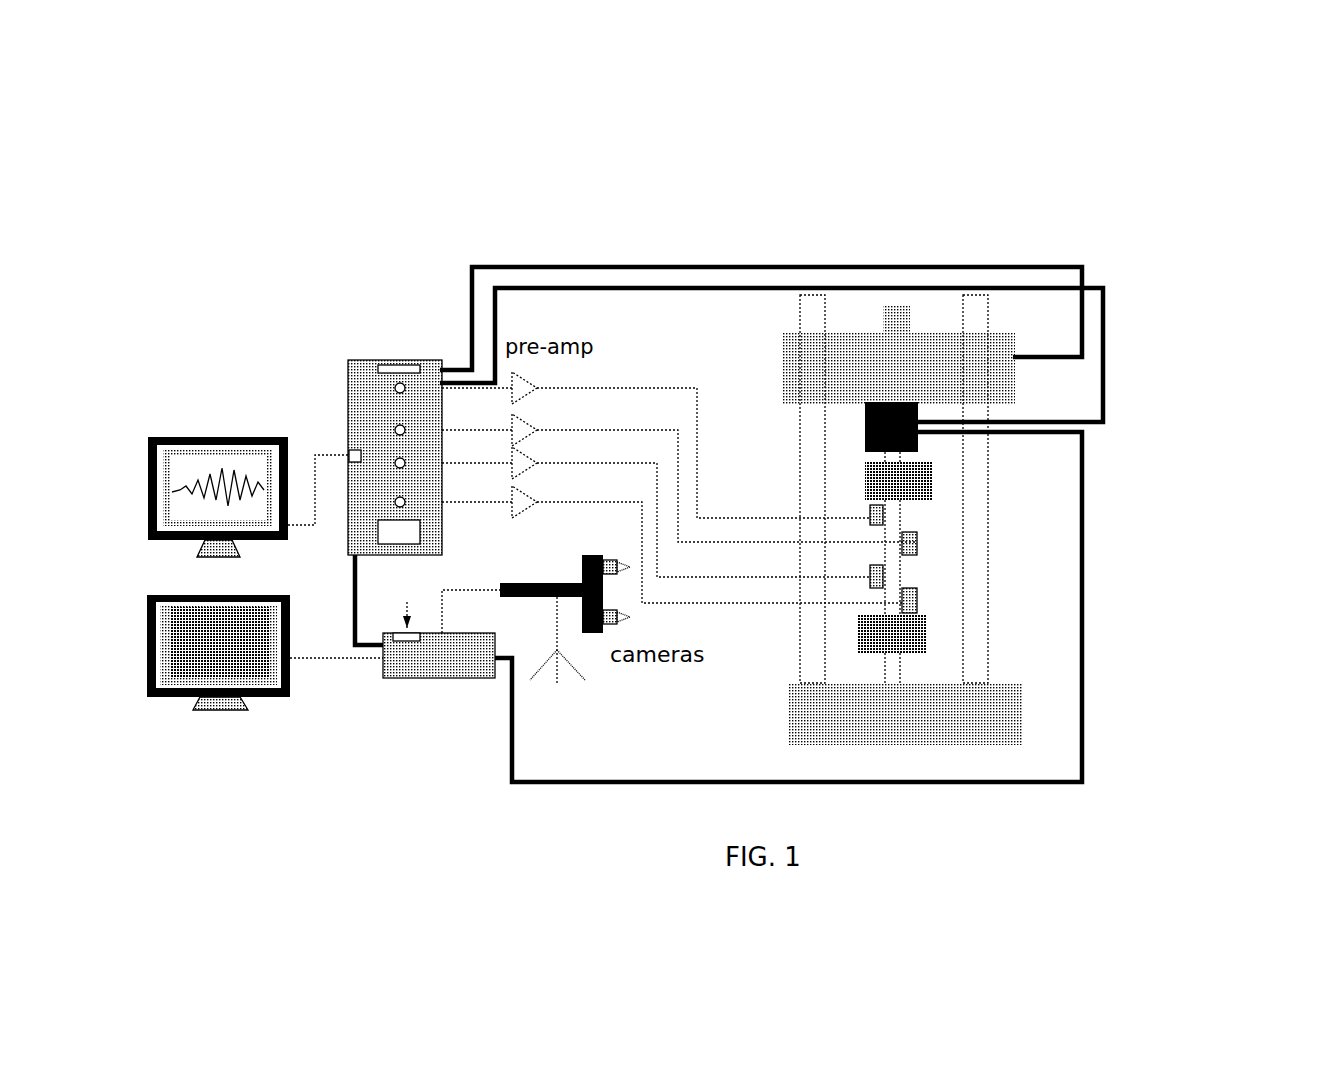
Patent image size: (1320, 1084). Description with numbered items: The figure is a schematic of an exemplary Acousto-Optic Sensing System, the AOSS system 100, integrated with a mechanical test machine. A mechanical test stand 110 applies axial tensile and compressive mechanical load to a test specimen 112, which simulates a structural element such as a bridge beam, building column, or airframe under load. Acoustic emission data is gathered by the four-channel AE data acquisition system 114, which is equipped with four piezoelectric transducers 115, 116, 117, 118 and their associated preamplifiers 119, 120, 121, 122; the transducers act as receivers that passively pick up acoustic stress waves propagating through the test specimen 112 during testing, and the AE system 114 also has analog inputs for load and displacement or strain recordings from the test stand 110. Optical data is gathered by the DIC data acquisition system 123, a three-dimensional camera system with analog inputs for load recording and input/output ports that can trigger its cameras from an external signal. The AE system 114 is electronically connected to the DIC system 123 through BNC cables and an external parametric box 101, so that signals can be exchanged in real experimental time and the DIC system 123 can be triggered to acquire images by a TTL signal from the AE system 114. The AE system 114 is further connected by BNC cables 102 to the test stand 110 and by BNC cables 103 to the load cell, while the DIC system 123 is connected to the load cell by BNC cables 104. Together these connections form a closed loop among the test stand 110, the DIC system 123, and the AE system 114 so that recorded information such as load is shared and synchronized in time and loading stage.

The AOSS system 100 is at (475, 260).
The external parametric box 101 is at (352, 618).
The BNC cables 102 is at (1003, 267).
The BNC cables 103 is at (1103, 378).
The BNC cables 104 is at (1082, 725).
The mechanical test stand 110 is at (1010, 365).
The test specimen 112 is at (888, 545).
The AE data acquisition system 114 is at (345, 405).
The piezoelectric transducer 115 is at (917, 543).
The piezoelectric transducer 116 is at (917, 595).
The piezoelectric transducer 117 is at (878, 515).
The piezoelectric transducer 118 is at (878, 570).
The preamplifier 119 is at (523, 385).
The preamplifier 120 is at (527, 432).
The preamplifier 121 is at (530, 467).
The preamplifier 122 is at (537, 503).
The DIC data acquisition system 123 is at (428, 720).